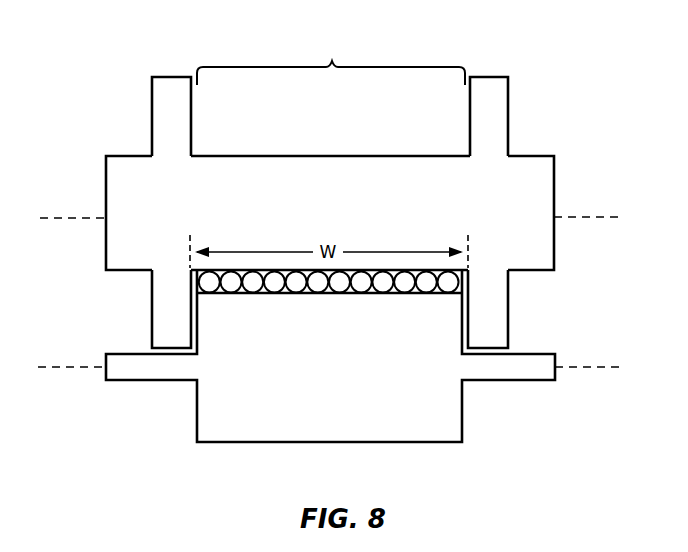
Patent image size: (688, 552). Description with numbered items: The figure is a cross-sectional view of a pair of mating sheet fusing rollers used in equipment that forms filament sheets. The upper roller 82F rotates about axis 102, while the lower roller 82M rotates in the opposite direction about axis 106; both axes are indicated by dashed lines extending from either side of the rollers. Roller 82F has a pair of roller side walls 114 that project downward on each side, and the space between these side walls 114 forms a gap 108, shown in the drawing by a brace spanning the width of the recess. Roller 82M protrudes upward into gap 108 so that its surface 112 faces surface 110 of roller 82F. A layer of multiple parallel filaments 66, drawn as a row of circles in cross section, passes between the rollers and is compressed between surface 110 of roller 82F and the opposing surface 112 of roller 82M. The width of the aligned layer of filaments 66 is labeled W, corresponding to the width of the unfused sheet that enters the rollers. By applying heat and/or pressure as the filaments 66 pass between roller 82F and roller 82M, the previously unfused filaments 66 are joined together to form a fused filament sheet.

The roller 82F is at (118, 170).
The roller 82M is at (205, 412).
The roller side walls 114 is at (162, 98).
The gap 108 is at (331, 59).
The axis 102 is at (48, 208).
The axis 106 is at (48, 375).
The filaments 66 is at (318, 294).
The surface 110 is at (207, 285).
The surface 112 is at (452, 283).